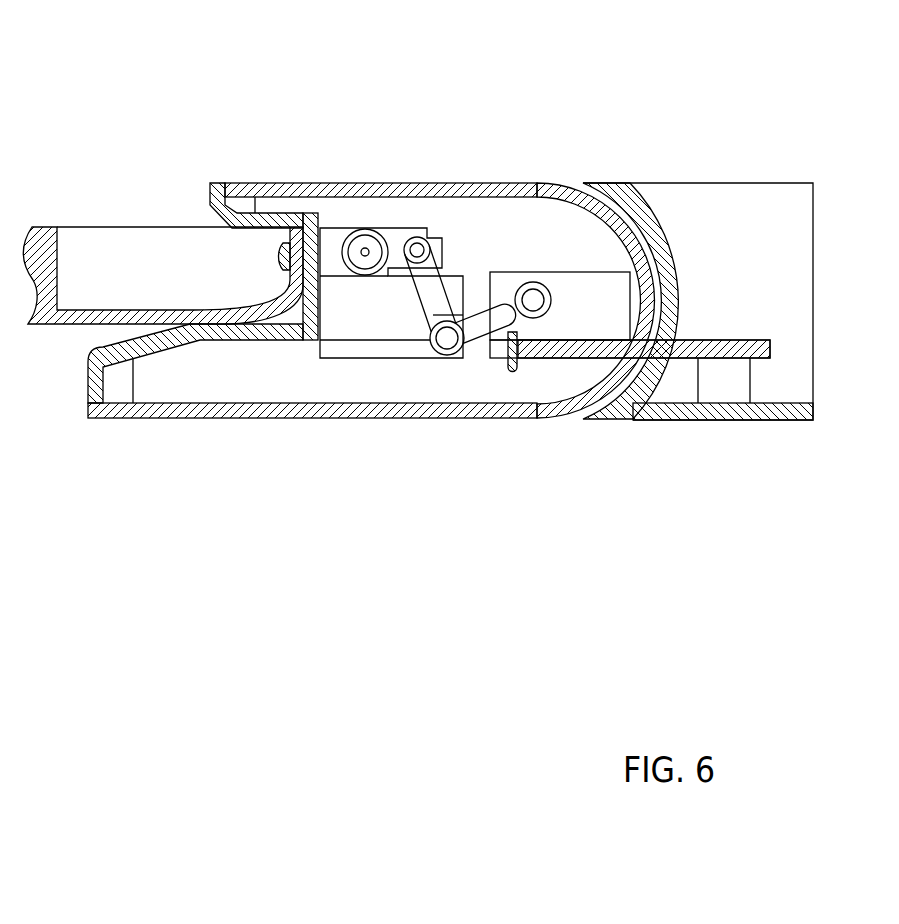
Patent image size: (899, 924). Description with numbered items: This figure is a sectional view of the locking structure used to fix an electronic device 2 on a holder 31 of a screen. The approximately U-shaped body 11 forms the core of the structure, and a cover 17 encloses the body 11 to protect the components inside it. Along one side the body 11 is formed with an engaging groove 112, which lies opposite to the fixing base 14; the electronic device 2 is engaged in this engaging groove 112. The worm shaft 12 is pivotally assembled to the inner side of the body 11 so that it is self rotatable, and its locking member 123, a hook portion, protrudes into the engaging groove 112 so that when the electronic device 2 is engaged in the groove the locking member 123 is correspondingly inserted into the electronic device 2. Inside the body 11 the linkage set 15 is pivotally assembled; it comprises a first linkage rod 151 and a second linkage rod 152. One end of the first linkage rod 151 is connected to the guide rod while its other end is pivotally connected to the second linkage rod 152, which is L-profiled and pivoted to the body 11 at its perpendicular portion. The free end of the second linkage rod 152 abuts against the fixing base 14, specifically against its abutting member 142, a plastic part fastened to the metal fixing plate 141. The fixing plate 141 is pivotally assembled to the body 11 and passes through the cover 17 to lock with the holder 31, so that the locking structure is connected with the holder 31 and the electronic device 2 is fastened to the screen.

The electronic device 2 is at (45, 230).
The body 11 is at (223, 183).
The engaging groove 112 is at (296, 310).
The worm shaft 12 is at (335, 260).
The locking member 123 is at (280, 257).
The fixing base 14 is at (628, 443).
The fixing plate 141 is at (558, 352).
The abutting member 142 is at (530, 447).
The linkage set 15 is at (404, 407).
The first linkage rod 151 is at (398, 258).
The second linkage rod 152 is at (480, 332).
The cover 17 is at (480, 183).
The holder 31 is at (690, 223).